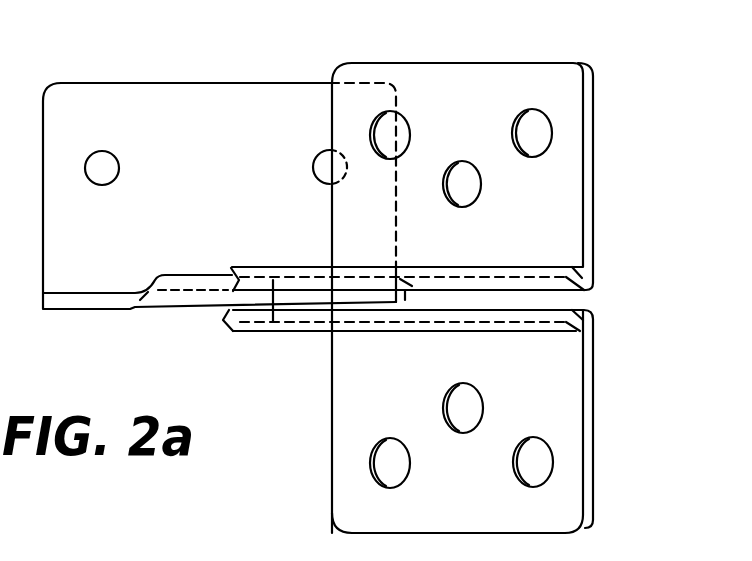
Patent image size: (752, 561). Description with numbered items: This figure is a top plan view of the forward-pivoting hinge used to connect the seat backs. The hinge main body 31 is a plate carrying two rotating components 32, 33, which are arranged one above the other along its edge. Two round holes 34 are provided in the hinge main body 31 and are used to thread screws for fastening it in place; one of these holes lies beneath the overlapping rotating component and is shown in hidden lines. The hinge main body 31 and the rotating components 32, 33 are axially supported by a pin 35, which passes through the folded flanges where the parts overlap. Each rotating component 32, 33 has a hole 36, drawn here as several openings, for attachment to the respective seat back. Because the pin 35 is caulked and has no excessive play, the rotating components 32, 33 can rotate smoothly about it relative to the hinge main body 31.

The hinge main body 31 is at (200, 83).
The rotating component 32 is at (593, 180).
The rotating component 33 is at (593, 430).
The round holes 34 is at (113, 166).
The pin 35 is at (312, 312).
The hole 36 is at (530, 150).